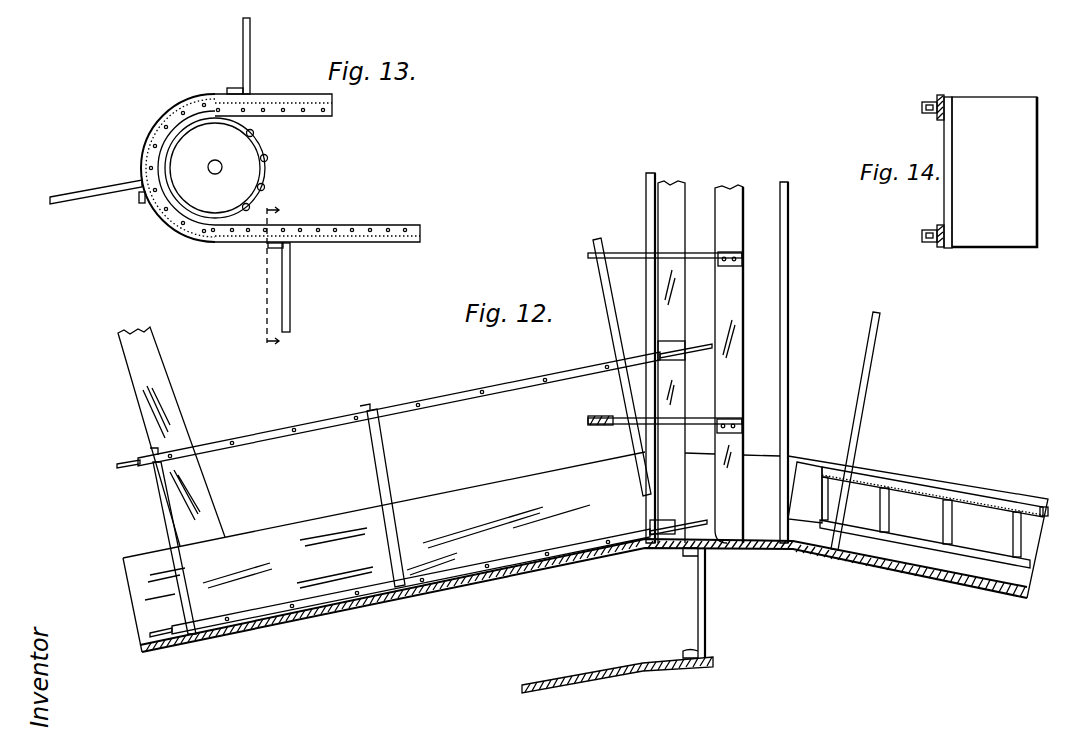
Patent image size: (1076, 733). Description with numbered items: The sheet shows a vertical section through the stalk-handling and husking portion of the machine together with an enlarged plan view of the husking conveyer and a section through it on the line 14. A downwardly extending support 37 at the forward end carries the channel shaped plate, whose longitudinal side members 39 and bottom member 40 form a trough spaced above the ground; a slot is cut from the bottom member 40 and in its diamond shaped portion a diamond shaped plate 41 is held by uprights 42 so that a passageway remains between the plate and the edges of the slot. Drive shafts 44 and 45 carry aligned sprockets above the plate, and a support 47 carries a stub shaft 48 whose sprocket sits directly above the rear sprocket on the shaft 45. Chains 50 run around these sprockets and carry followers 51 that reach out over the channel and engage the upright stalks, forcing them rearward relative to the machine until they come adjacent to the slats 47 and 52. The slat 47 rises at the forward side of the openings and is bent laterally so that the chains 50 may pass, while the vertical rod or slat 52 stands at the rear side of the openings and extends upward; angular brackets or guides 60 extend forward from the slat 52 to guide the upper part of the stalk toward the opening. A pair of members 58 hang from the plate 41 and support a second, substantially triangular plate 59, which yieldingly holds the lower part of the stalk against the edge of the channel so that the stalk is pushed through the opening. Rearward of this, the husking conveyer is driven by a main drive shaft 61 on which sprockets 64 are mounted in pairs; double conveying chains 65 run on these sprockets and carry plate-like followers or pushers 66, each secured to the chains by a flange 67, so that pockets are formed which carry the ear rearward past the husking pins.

In FIG. 13, the section line 14 is at (277, 276).
In FIG. 12, the support 37 is at (165, 385).
In FIG. 12, the longitudinal side member 39 is at (585, 552).
In FIG. 12, the bottom member 40 is at (345, 607).
In FIG. 12, the diamond shaped plate 41 is at (507, 580).
In FIG. 12, the upright 42 is at (646, 498).
In FIG. 12, the drive shaft 44 is at (378, 465).
In FIG. 12, the drive shaft 45 is at (615, 322).
In FIG. 12, the slat 47 is at (678, 186).
In FIG. 12, the stub shaft 48 is at (187, 565).
In FIG. 12, the chain 50 is at (255, 432).
In FIG. 12, the follower 51 is at (127, 458).
In FIG. 12, the vertical rod or slat 52 is at (737, 278).
In FIG. 12, the member 58 is at (707, 606).
In FIG. 12, the second plate 59 is at (588, 667).
In FIG. 12, the angular bracket or guide 60 is at (628, 252).
In FIG. 12, the main drive shaft 61 is at (868, 366).
In FIG. 13, the main drive shaft 61 is at (218, 163).
In FIG. 13, the sprocket 64 is at (216, 168).
In FIG. 12, the conveying chain 65 is at (922, 486).
In FIG. 13, the conveying chain 65 is at (245, 110).
In FIG. 14, the conveying chain 65 is at (938, 100).
In FIG. 12, the follower or pusher 66 is at (962, 523).
In FIG. 13, the follower or pusher 66 is at (250, 50).
In FIG. 14, the follower or pusher 66 is at (994, 172).
In FIG. 14, the flange 67 is at (950, 193).